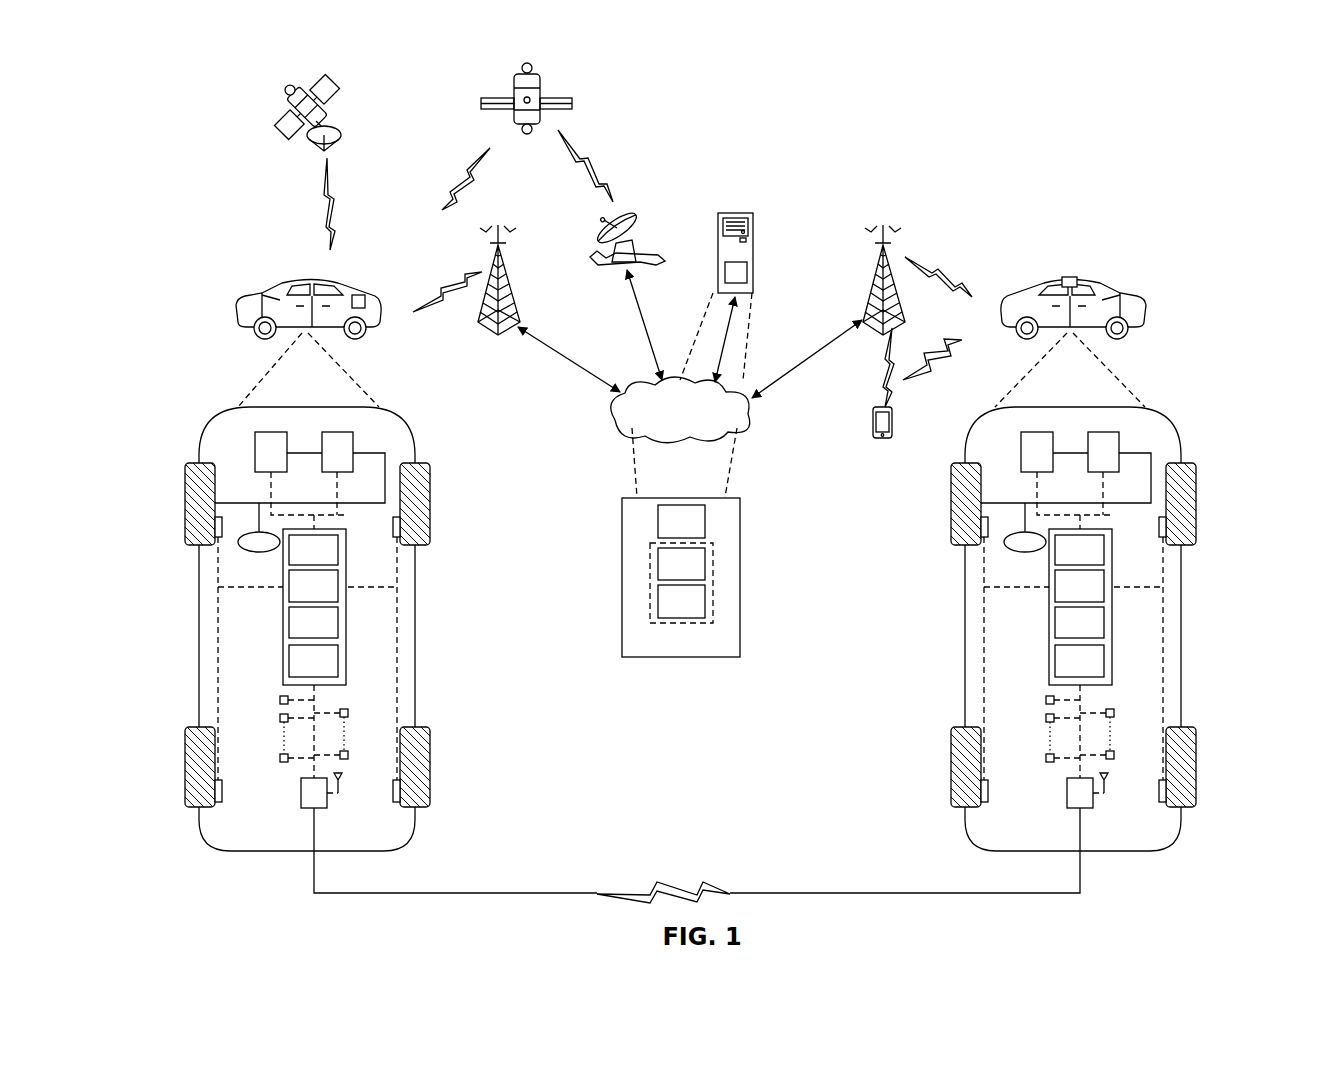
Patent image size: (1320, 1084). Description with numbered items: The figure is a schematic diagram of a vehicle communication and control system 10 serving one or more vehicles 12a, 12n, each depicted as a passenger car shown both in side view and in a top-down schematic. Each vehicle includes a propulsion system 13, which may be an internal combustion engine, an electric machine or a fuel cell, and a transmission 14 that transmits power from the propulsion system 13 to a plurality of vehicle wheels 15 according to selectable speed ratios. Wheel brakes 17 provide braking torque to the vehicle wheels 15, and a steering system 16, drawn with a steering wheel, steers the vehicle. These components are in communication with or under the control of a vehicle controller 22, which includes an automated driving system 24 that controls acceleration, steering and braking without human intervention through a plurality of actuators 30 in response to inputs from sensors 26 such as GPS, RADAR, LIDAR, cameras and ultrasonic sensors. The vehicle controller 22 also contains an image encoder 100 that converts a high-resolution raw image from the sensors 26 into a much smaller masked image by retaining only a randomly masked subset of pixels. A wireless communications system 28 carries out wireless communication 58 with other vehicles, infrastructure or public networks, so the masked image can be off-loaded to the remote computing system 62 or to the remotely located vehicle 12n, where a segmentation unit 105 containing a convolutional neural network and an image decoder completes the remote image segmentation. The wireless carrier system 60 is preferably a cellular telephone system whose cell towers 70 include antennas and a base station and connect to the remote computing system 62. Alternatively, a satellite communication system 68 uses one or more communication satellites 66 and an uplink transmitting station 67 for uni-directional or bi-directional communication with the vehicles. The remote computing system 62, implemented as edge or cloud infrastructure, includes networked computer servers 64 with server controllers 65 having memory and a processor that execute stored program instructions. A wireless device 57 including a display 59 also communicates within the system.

The vehicle communication and control system 10 is at (686, 110).
The vehicle 12a is at (238, 318).
The vehicle 12n is at (1147, 320).
The propulsion system 13 is at (255, 452).
The transmission 14 is at (353, 450).
The vehicle wheels 15 is at (215, 500).
The steering system 16 is at (259, 552).
The wheel brakes 17 is at (393, 527).
The vehicle controller 22 is at (352, 576).
The automated driving system 24 is at (696, 661).
The sensors 26 is at (360, 295).
The wireless communications system 28 is at (322, 808).
The actuators 30 is at (348, 713).
The wireless device 57 is at (893, 428).
The wireless communication 58 is at (322, 203).
The display 59 is at (876, 420).
The wireless carrier system 60 is at (492, 345).
The remote computing system 62 is at (667, 424).
The networked computer server 64 is at (755, 250).
The server controller 65 is at (725, 272).
The communication satellite 66 is at (540, 78).
The uplink transmitting station 67 is at (645, 250).
The satellite communication system 68 is at (352, 92).
The cell tower 70 is at (507, 283).
The image encoder 100 is at (696, 550).
The segmentation unit 105 is at (714, 592).